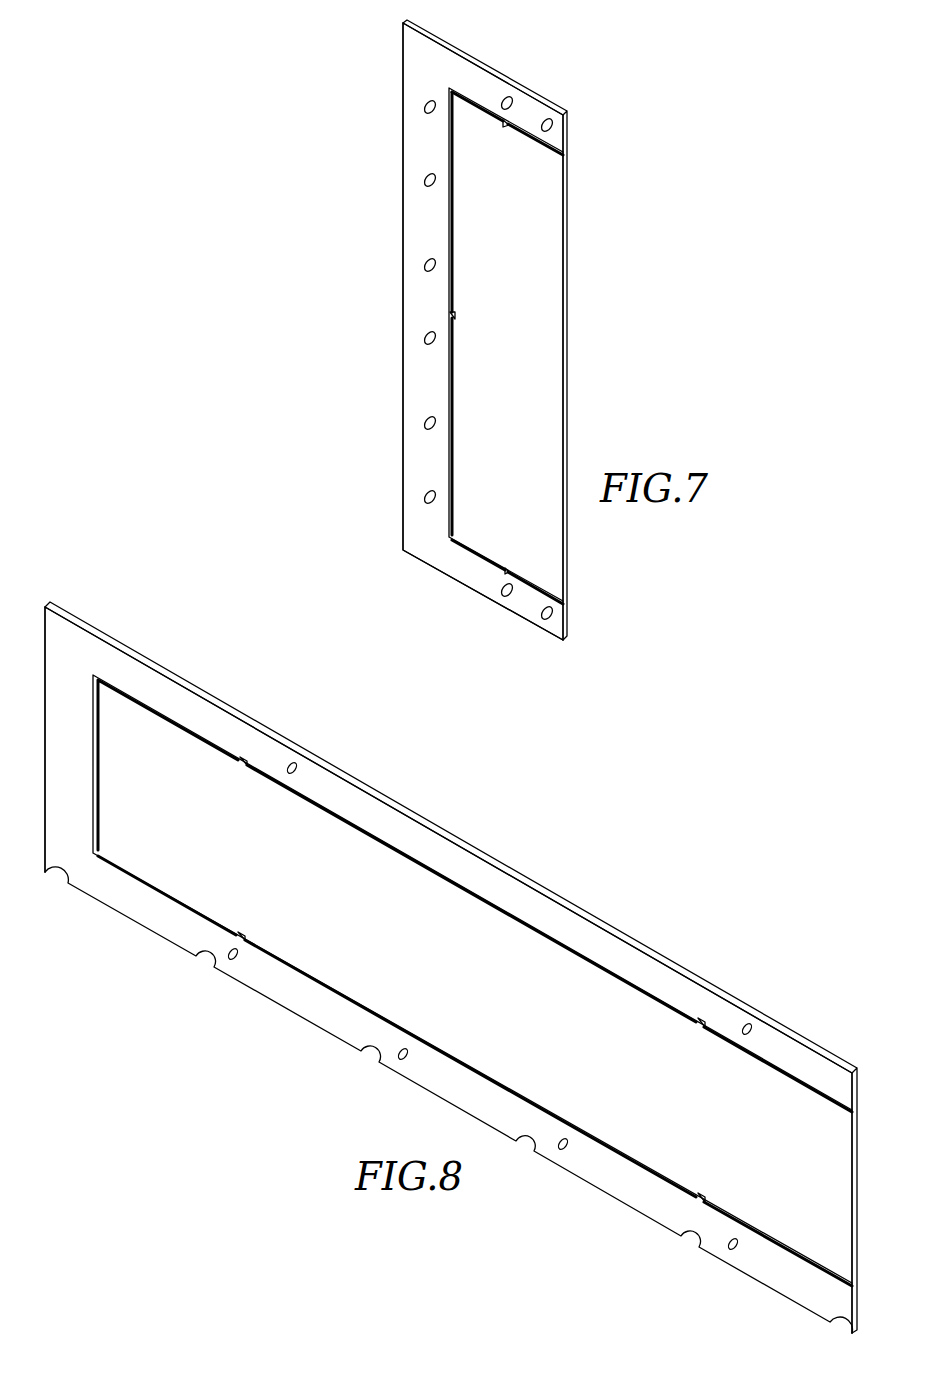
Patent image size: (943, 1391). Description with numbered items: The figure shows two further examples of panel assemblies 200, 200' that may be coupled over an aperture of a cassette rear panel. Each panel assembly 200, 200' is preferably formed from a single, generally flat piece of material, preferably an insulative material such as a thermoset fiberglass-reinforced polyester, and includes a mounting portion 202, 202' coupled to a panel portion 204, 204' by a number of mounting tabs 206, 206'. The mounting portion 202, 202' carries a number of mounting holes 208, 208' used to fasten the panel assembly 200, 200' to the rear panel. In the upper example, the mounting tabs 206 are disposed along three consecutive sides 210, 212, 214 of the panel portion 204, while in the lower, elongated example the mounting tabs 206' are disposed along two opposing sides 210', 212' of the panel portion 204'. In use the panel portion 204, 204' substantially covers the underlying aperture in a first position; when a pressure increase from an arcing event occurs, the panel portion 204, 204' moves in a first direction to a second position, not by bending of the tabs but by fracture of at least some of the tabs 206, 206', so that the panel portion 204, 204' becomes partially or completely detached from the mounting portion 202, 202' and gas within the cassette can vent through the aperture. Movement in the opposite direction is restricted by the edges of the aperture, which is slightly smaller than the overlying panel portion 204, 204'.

In FIG. 7, the panel assembly 200 is at (400, 331).
In FIG. 7, the mounting portion 202 is at (452, 330).
In FIG. 7, the panel portion 204 is at (532, 344).
In FIG. 7, the mounting tabs 206 is at (498, 347).
In FIG. 7, the mounting holes 208 is at (446, 323).
In FIG. 7, the side of panel portion 210 is at (507, 536).
In FIG. 7, the side of panel portion 212 is at (507, 154).
In FIG. 7, the side of panel portion 214 is at (455, 345).
In FIG. 8, the panel assembly 200' is at (448, 970).
In FIG. 8, the mounting portion 202' is at (451, 967).
In FIG. 8, the panel portion 204' is at (472, 979).
In FIG. 8, the mounting tabs 206' is at (473, 979).
In FIG. 8, the mounting holes 208' is at (487, 993).
In FIG. 8, the side of panel portion 210' is at (475, 1071).
In FIG. 8, the side of panel portion 212' is at (475, 896).